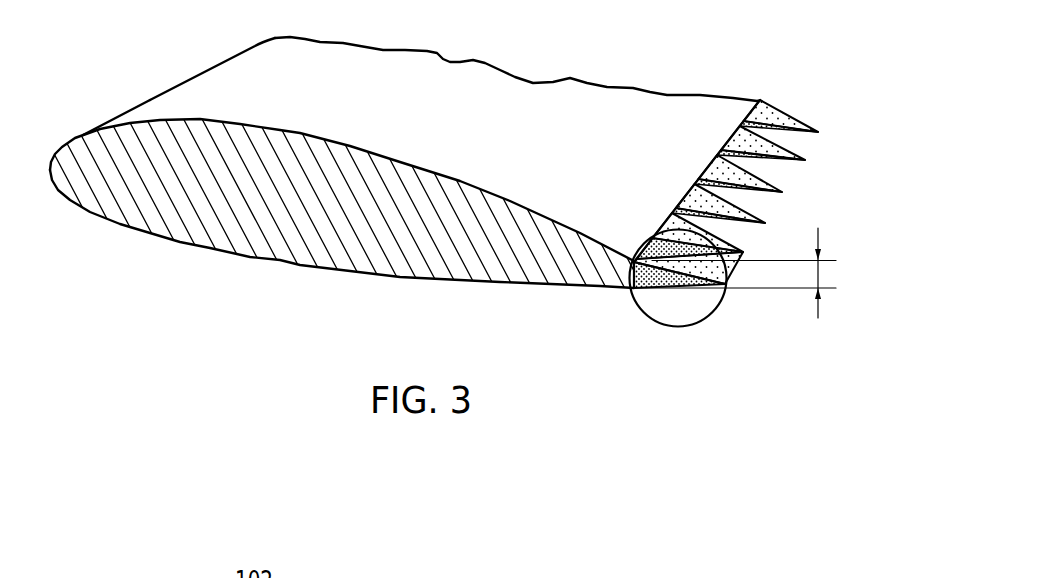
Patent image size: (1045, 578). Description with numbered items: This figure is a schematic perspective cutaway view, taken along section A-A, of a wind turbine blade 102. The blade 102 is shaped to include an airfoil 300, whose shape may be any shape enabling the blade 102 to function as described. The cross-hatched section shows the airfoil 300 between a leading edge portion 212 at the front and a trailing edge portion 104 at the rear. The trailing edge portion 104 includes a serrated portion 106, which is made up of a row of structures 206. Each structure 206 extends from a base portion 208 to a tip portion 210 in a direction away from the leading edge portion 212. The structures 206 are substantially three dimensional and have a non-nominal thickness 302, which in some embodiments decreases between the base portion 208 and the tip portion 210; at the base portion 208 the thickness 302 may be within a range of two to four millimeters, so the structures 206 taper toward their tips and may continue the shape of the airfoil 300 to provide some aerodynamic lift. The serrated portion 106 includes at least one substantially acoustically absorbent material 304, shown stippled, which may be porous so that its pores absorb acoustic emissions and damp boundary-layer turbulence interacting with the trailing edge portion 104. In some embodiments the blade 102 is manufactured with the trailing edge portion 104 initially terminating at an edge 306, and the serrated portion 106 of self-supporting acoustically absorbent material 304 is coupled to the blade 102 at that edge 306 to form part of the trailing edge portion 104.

The wind turbine blade 102 is at (236, 26).
The trailing edge portion 104 is at (605, 237).
The serrated portion 106 is at (795, 213).
The structure 206 is at (685, 289).
The base portion 208 is at (757, 102).
The tip portion 210 is at (820, 132).
The leading edge portion 212 is at (123, 115).
The airfoil 300 is at (367, 67).
The thickness 302 is at (820, 278).
The substantially acoustically absorbent material 304 is at (660, 288).
The edge 306 is at (738, 128).
The section A- A is at (725, 297).